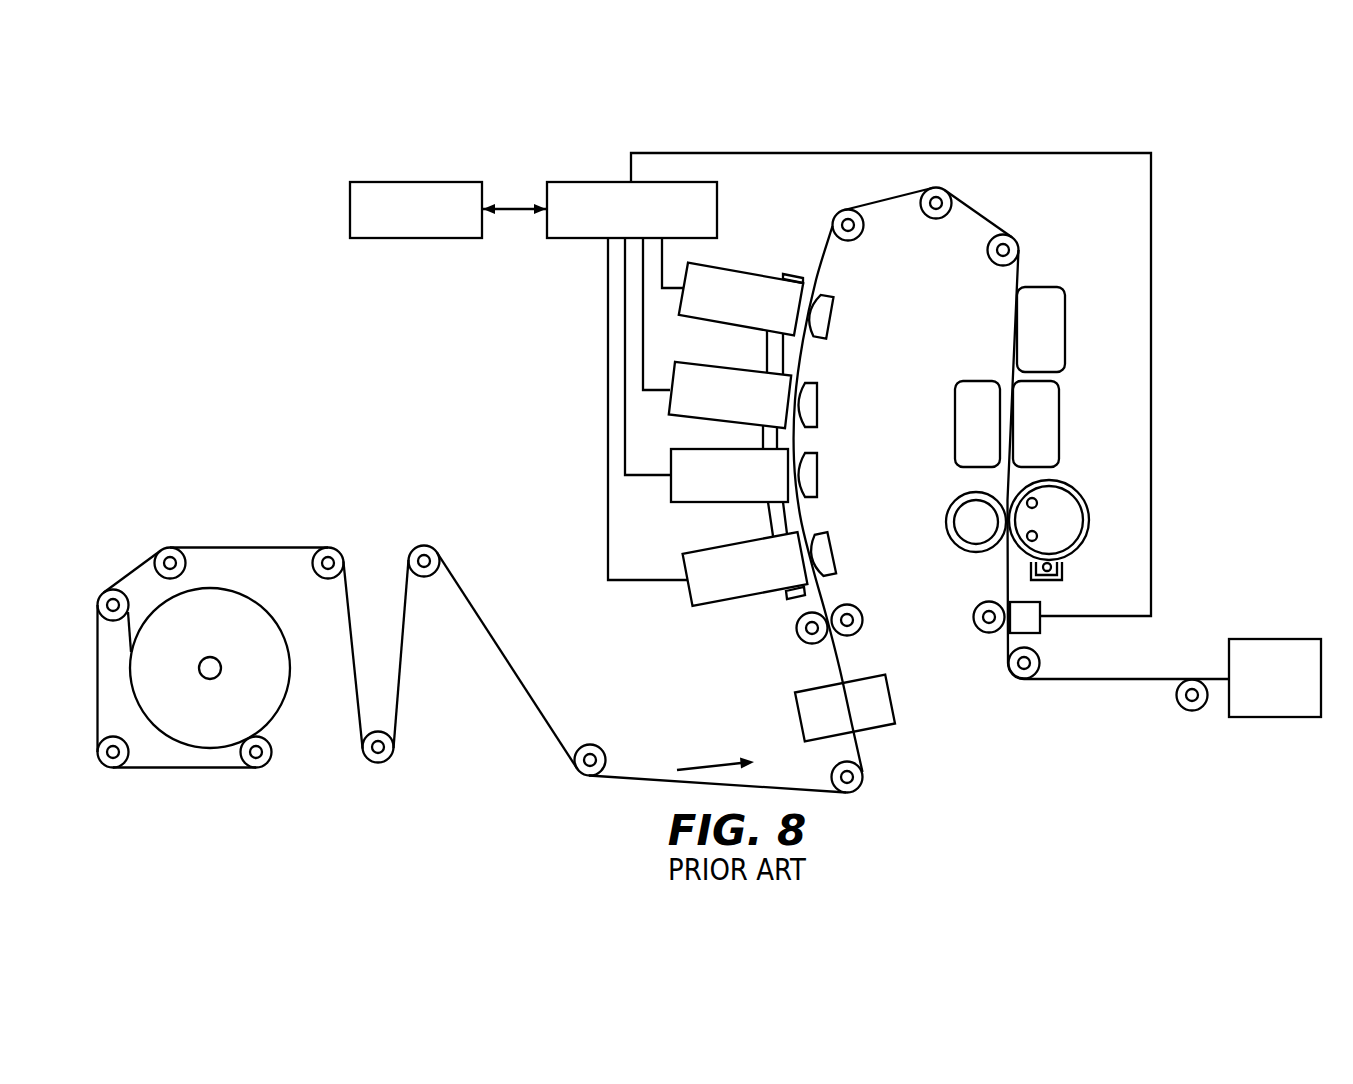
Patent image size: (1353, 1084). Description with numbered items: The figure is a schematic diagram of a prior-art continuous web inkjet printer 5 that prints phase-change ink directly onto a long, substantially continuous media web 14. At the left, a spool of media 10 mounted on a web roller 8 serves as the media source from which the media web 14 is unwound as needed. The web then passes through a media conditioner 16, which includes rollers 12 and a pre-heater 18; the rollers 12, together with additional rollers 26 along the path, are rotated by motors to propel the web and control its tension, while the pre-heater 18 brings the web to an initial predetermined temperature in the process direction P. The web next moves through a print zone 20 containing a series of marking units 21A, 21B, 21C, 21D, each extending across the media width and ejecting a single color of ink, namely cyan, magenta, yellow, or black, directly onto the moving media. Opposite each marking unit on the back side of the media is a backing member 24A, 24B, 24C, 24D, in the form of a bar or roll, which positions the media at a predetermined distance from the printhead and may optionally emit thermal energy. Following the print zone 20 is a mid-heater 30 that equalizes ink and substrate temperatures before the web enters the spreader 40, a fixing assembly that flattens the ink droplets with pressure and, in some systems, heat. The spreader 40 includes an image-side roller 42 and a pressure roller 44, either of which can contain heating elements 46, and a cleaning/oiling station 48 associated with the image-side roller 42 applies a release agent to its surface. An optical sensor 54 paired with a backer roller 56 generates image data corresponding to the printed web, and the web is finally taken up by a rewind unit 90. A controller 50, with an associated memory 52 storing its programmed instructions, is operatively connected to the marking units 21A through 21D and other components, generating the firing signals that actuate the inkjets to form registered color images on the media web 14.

The inkjet printer 5 is at (334, 271).
The web roller 8 is at (211, 680).
The spool of media 10 is at (286, 636).
The rollers 12 is at (434, 578).
The media web 14 is at (240, 546).
The media conditioner 16 is at (595, 690).
The pre-heater 18 is at (893, 697).
The print zone 20 is at (596, 503).
The marking unit 21A is at (747, 599).
The marking unit 21B is at (725, 503).
The marking unit 21C is at (712, 422).
The marking unit 21D is at (728, 326).
The backing member 24A is at (833, 548).
The backing member 24B is at (818, 401).
The backing member 24C is at (818, 471).
The backing member 24D is at (831, 313).
The rollers 26 is at (862, 233).
The mid-heater 30 is at (1084, 318).
The spreader 40 is at (1087, 450).
The image-side roller 42 is at (1090, 535).
The pressure roller 44 is at (967, 530).
The heating elements 46 is at (1036, 533).
The cleaning/oiling station 48 is at (1052, 582).
The controller 50 is at (587, 181).
The memory 52 is at (418, 181).
The optical sensor 54 is at (1042, 623).
The backer roller 56 is at (975, 613).
The rewind unit 90 is at (1275, 638).
The process direction P is at (717, 762).